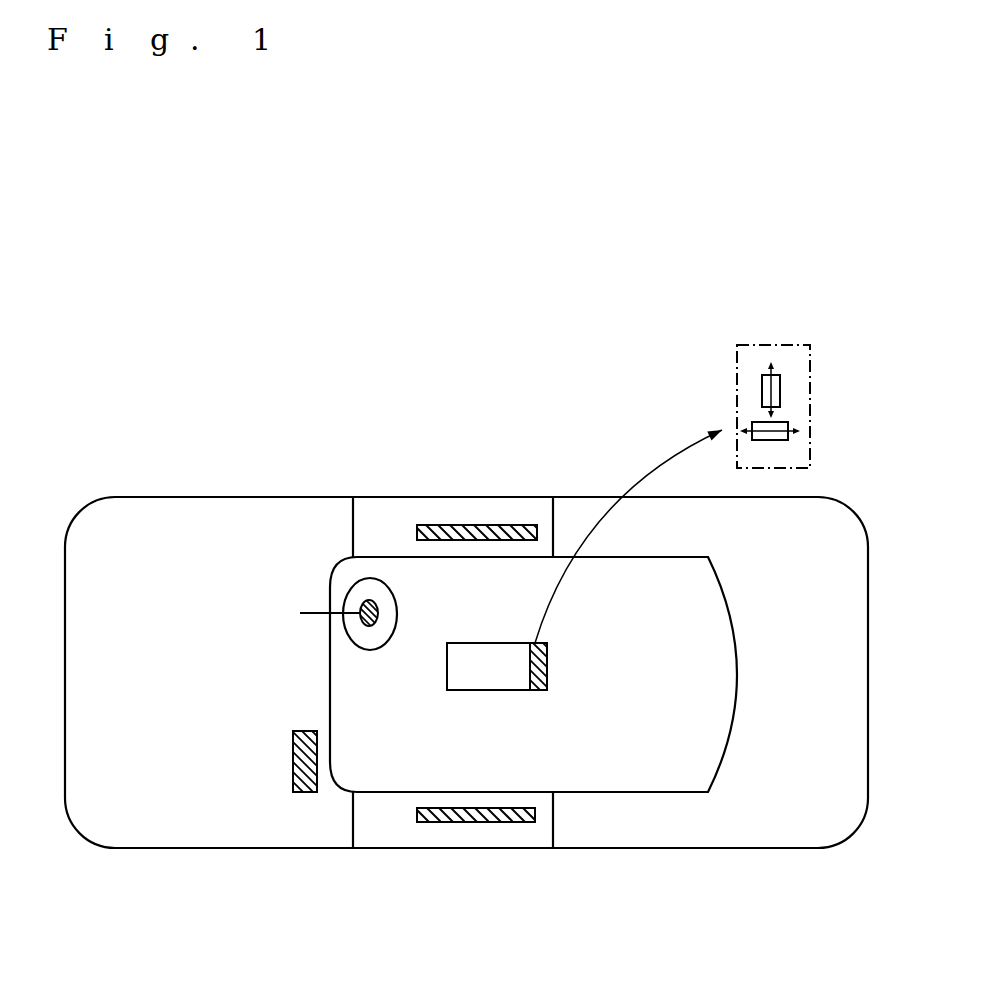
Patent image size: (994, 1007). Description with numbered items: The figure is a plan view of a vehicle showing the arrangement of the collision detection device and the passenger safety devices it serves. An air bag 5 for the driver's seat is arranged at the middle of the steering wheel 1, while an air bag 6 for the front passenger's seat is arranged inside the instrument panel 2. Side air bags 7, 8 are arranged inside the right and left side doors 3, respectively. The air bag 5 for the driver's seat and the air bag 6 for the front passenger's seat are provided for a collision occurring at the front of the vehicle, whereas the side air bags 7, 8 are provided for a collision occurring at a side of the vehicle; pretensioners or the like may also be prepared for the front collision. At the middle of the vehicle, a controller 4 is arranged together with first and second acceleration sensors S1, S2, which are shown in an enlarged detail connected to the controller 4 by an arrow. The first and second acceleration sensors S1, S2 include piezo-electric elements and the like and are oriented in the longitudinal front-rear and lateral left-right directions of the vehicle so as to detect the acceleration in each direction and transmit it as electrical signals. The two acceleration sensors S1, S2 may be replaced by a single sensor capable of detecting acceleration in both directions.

The steering wheel 1 is at (350, 578).
The instrument panel 2 is at (335, 757).
The side doors 3 is at (522, 510).
The controller 4 is at (490, 662).
The air bag for driver's seat 5 is at (372, 600).
The air bag for front passenger's seat 6 is at (293, 790).
The side air bag 7 is at (459, 822).
The side air bag 8 is at (463, 525).
The first acceleration sensor S1 is at (775, 440).
The second acceleration sensor S2 is at (781, 390).